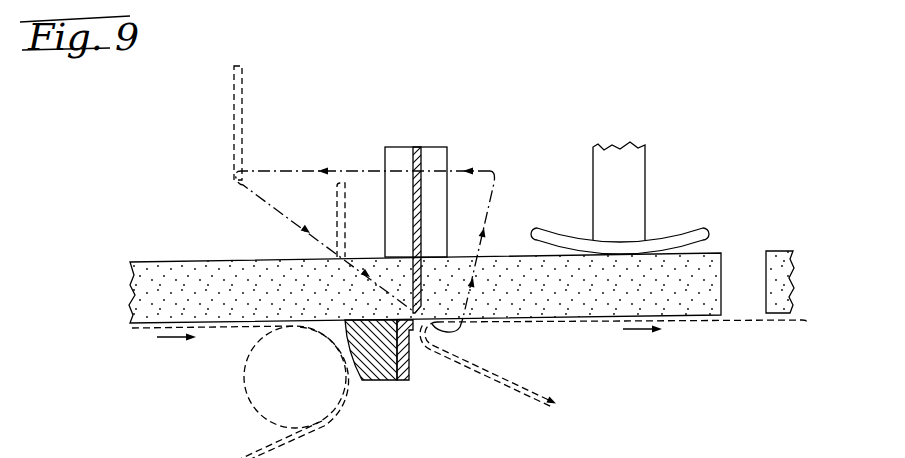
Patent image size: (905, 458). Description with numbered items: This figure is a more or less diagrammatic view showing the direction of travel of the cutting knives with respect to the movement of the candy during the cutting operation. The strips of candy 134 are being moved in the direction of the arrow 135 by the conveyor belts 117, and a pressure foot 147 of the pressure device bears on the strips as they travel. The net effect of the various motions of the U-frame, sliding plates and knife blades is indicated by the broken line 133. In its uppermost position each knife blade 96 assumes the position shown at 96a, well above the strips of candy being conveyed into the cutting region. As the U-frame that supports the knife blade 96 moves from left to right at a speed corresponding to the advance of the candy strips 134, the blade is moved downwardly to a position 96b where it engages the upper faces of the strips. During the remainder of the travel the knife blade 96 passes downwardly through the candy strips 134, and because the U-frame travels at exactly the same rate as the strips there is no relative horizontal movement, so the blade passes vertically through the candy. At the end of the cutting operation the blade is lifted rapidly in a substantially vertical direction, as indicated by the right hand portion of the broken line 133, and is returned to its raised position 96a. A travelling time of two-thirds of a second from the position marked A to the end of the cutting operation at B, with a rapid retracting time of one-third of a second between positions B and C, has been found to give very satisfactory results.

The knife blade 96 is at (419, 148).
The uppermost position of knife blade 96a is at (244, 95).
The lowered position of knife blade 96b is at (346, 184).
The broken line 133 is at (289, 167).
The strips of candy 134 is at (155, 262).
The arrow 135 is at (172, 341).
The conveyor belts 117 is at (231, 330).
The pressure feet 147 is at (600, 197).
The starting position A is at (238, 180).
The end of cutting operation B is at (458, 330).
The end of retracting position C is at (495, 172).